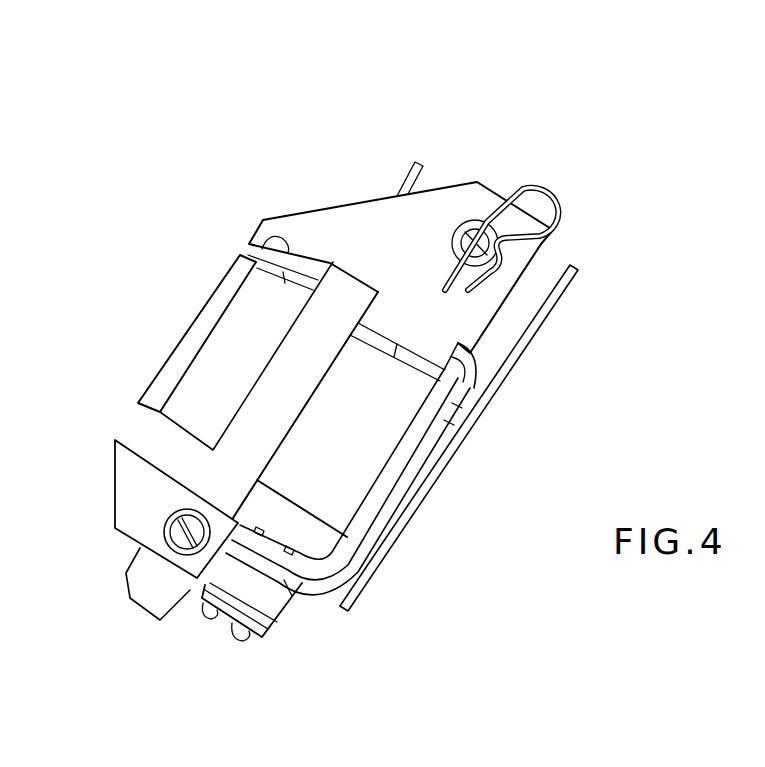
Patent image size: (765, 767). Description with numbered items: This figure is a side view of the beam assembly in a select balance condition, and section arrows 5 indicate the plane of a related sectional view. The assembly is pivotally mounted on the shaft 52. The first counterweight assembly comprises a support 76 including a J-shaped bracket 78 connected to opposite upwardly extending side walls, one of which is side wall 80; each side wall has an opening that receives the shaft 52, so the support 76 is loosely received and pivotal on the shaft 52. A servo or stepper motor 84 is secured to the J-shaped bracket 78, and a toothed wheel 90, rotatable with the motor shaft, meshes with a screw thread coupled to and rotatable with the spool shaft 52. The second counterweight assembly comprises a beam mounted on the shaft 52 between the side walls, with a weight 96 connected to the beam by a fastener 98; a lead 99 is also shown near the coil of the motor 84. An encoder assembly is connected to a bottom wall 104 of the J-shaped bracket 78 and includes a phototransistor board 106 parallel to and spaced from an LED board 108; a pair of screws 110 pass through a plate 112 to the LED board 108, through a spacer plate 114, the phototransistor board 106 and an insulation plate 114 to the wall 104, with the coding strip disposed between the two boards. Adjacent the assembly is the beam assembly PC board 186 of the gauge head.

The section line 5- 5 is at (340, 95).
The shaft 52 is at (474, 240).
The support 76 is at (331, 557).
The J-shaped bracket 78 is at (406, 467).
The side wall 80 is at (541, 243).
The servo or stepper motor 84 is at (216, 306).
The toothed wheel 90 is at (422, 178).
The weight 96 is at (128, 483).
The fastener 98 is at (180, 523).
The lead wire 99 is at (203, 462).
The bottom wall 104 is at (263, 548).
The phototransistor board 106 is at (300, 595).
The LED board 108 is at (272, 643).
The screws 110 is at (217, 618).
The plate 112 is at (263, 640).
The spacer plate / insulation plate 114 is at (296, 584).
The beam assembly PC board 186 is at (500, 374).